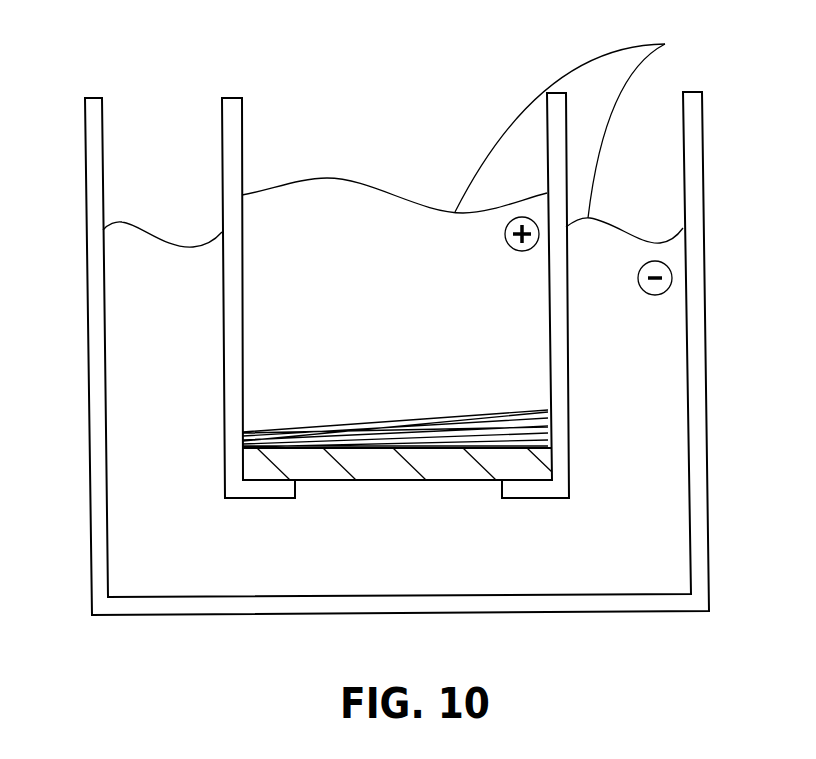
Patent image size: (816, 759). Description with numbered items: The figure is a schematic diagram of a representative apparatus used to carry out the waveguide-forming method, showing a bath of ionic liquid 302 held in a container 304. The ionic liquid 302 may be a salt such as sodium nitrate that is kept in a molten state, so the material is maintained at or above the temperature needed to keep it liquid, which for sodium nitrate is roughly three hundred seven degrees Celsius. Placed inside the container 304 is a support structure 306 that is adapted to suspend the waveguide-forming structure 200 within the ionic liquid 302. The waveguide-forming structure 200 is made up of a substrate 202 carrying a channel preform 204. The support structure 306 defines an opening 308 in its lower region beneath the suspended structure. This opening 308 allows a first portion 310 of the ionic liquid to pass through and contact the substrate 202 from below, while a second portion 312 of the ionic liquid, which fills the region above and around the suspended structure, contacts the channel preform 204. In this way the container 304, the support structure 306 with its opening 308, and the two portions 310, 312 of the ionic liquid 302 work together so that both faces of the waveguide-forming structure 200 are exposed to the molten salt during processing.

The waveguide-forming structure 200 is at (397, 406).
The substrate 202 is at (377, 473).
The channel preform 204 is at (410, 428).
The ionic liquid 302 is at (586, 167).
The container 304 is at (85, 112).
The support structure 306 is at (222, 112).
The opening 308 is at (353, 522).
The first portion of the ionic liquid 310 is at (122, 222).
The second portion of the ionic liquid 312 is at (320, 177).